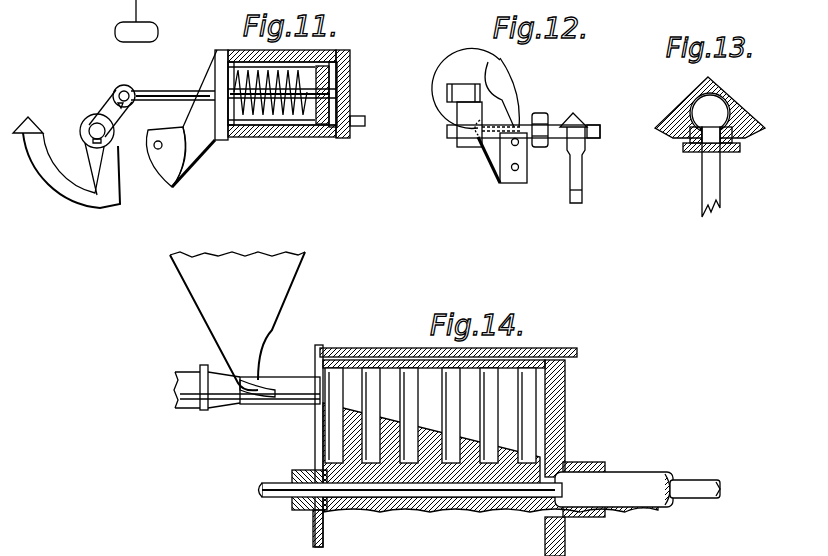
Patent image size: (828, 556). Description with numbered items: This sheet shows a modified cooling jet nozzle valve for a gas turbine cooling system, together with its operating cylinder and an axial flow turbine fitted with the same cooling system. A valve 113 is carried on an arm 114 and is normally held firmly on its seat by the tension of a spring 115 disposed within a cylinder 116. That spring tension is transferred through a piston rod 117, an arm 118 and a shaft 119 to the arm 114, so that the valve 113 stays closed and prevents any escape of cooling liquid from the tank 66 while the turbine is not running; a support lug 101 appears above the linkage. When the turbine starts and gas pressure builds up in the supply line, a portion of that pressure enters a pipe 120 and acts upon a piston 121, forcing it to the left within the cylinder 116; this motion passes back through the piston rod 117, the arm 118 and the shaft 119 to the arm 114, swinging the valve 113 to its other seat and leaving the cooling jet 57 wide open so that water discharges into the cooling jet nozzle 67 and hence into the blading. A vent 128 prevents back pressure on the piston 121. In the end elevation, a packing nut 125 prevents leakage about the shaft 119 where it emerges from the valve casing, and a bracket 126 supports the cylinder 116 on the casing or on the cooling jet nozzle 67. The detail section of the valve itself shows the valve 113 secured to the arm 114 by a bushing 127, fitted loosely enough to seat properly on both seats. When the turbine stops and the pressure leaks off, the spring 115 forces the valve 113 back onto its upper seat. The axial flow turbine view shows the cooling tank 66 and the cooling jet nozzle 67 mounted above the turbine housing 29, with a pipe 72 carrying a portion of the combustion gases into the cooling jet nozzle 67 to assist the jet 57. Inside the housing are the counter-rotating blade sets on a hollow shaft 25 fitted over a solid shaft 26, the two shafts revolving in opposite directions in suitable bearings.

In FIG. 11, the support lug 101 is at (115, 33).
In FIG. 11, the valve 113 is at (29, 115).
In FIG. 12, the valve 113 is at (590, 121).
In FIG. 13, the valve 113 is at (735, 108).
In FIG. 11, the arm 114 is at (60, 201).
In FIG. 12, the arm 114 is at (585, 176).
In FIG. 13, the arm 114 is at (722, 196).
In FIG. 11, the spring 115 is at (266, 110).
In FIG. 11, the cylinder 116 is at (295, 138).
In FIG. 11, the piston rod 117 is at (170, 91).
In FIG. 12, the piston rod 117 is at (523, 131).
In FIG. 11, the arm 118 is at (106, 112).
In FIG. 12, the arm 118 is at (450, 112).
In FIG. 11, the shaft 119 is at (89, 141).
In FIG. 12, the shaft 119 is at (600, 135).
In FIG. 11, the pipe 120 is at (360, 116).
In FIG. 11, the piston 121 is at (320, 129).
In FIG. 12, the packing nut 125 is at (546, 119).
In FIG. 11, the bracket 126 is at (190, 168).
In FIG. 12, the bracket 126 is at (483, 160).
In FIG. 13, the bushing 127 is at (742, 148).
In FIG. 11, the vent 128 is at (236, 137).
In FIG. 14, the shaft 25 is at (640, 478).
In FIG. 14, the shaft 26 is at (706, 500).
In FIG. 14, the turbine housing 29 is at (404, 347).
In FIG. 14, the cooling jet 57 is at (276, 392).
In FIG. 14, the tank 66 is at (259, 265).
In FIG. 14, the cooling jet nozzle 67 is at (293, 378).
In FIG. 14, the pipe 72 is at (215, 406).